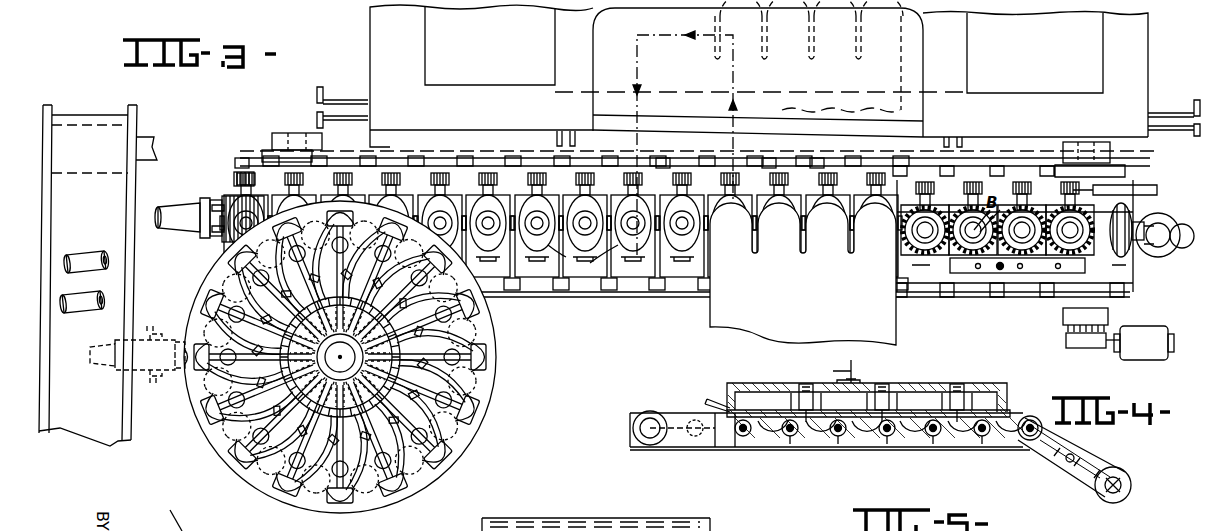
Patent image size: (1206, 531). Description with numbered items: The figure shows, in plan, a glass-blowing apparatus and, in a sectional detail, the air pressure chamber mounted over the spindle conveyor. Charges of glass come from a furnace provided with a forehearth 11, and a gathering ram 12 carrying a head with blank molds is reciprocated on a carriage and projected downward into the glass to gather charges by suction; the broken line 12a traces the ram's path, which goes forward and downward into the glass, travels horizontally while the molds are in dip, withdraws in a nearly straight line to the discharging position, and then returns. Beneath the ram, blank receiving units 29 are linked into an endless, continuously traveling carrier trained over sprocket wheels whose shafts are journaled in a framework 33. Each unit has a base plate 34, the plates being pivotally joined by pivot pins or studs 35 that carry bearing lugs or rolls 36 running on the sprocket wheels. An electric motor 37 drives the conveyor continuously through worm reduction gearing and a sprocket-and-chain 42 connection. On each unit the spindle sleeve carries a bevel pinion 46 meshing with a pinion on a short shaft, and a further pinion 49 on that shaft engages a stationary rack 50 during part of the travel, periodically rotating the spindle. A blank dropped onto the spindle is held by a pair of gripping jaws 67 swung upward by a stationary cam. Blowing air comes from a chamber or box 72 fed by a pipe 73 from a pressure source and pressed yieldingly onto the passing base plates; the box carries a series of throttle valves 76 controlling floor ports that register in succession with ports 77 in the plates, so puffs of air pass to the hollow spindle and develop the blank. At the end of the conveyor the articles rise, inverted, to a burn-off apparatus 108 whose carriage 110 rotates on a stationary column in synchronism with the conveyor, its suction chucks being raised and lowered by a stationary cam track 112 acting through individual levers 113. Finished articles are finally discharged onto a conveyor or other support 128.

In FIG. 3, the forehearth 11 is at (957, 63).
In FIG. 3, the gathering ram 12 is at (709, 302).
In FIG. 3, the broken line path of the ram 12a is at (637, 68).
In FIG. 3, the blank receiving units 29 is at (508, 180).
In FIG. 3, the framework 33 is at (287, 133).
In FIG. 3, the bearing lugs or rolls 36 is at (658, 162).
In FIG. 4, the bearing lugs or rolls 36 is at (648, 448).
In FIG. 3, the electric motor 37 is at (1145, 330).
In FIG. 3, the chain 42 is at (1064, 333).
In FIG. 3, the bevel pinion 46 is at (905, 248).
In FIG. 3, the pinion 49 is at (824, 186).
In FIG. 3, the stationary rack 50 is at (1140, 186).
In FIG. 3, the gripping jaws 67 is at (583, 261).
In FIG. 3, the air chamber or box 72 is at (1034, 273).
In FIG. 4, the air chamber or box 72 is at (930, 392).
In FIG. 3, the burn-off apparatus 108 is at (284, 516).
In FIG. 3, the carriage 110 is at (364, 366).
In FIG. 3, the stationary cam track 112 is at (158, 358).
In FIG. 3, the levers 113 is at (490, 398).
In FIG. 3, the conveyor or other support 128 is at (112, 282).
In FIG. 4, the base plate 34 is at (725, 446).
In FIG. 4, the pivot pins or studs 35 is at (1028, 446).
In FIG. 4, the pipe 73 is at (833, 368).
In FIG. 4, the throttle valves 76 is at (799, 405).
In FIG. 4, the ports 77 is at (793, 442).